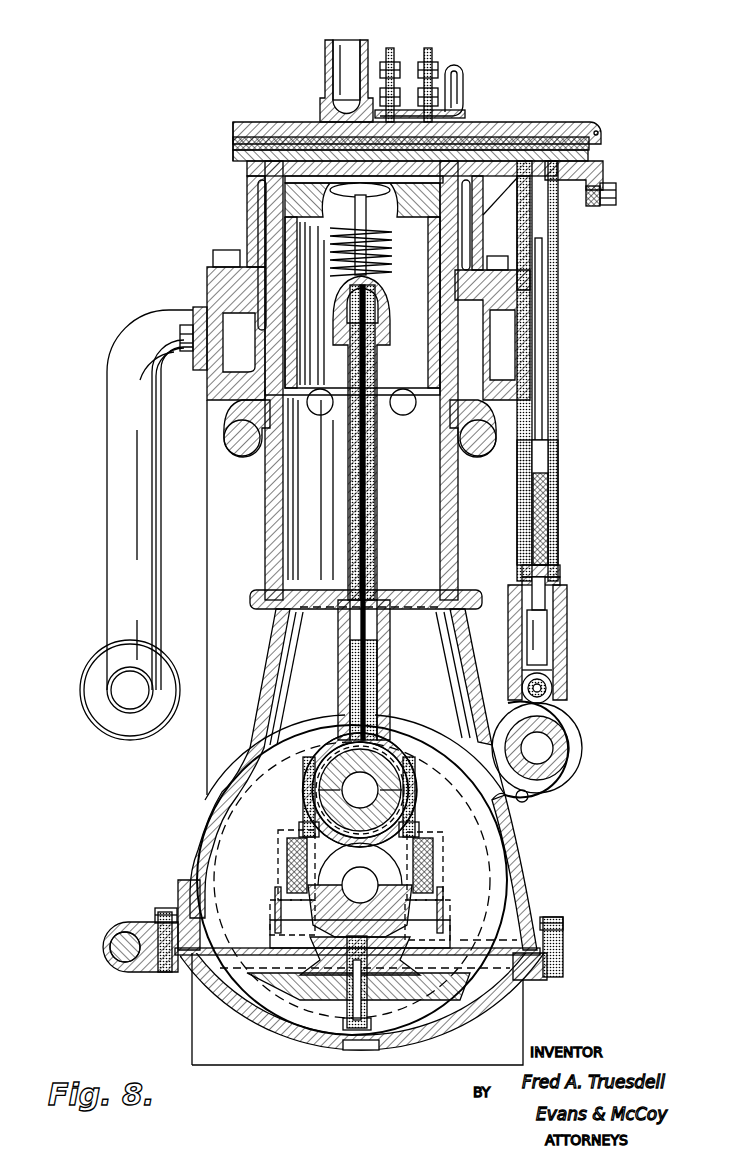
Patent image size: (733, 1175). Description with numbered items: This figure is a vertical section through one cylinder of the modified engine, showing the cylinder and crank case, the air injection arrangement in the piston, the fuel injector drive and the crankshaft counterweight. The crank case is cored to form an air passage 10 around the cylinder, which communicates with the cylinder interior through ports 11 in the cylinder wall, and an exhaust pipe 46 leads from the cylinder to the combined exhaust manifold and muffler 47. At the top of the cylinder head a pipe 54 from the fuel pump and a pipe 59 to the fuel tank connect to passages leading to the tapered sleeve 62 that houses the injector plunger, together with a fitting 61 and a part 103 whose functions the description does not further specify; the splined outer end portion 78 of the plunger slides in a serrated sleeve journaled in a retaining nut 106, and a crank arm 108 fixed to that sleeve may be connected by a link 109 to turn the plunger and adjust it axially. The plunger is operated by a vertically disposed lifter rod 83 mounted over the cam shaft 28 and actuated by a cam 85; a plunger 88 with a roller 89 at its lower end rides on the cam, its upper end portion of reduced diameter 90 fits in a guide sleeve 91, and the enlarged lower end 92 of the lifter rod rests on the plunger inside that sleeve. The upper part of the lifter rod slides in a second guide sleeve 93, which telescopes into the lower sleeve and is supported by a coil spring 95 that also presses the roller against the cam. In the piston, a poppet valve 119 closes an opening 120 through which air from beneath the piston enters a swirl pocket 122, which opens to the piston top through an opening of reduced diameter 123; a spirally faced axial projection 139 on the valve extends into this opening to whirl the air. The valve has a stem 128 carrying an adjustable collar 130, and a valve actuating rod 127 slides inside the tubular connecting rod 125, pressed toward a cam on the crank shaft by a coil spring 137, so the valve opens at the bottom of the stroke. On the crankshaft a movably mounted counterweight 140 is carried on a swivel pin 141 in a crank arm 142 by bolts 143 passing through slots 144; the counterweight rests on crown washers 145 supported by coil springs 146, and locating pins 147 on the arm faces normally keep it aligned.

The air passage 10 is at (228, 470).
The port 11 is at (234, 445).
The cam shaft 28 is at (545, 755).
The exhaust pipe 46 is at (107, 490).
The combined exhaust manifold and muffler 47 is at (86, 655).
The pipe 54 is at (430, 50).
The pipe 59 is at (390, 50).
The bracket 61 is at (458, 74).
The tapered sleeve 62 is at (320, 128).
The splined outer end portion 78 is at (602, 139).
The lifter rod 83 is at (558, 402).
The cam 85 is at (562, 745).
The plunger 88 is at (560, 630).
The roller 89 is at (553, 688).
The upper end portion of reduced diameter 90 is at (548, 592).
The guide sleeve 91 is at (558, 500).
The enlarged lower end 92 is at (560, 568).
The second guide sleeve 93 is at (558, 346).
The coil spring 95 is at (558, 530).
The head plate 103 is at (600, 152).
The retaining nut 106 is at (590, 124).
The crank arm 108 is at (603, 172).
The link 109 is at (605, 203).
The poppet valve 119 is at (390, 195).
The opening 120 is at (262, 218).
The swirl pocket 122 is at (262, 195).
The opening of reduced diameter 123 is at (290, 130).
The tubular connecting rod 125 is at (375, 560).
The valve actuating rod 127 is at (367, 580).
The stem 128 is at (384, 250).
The adjustable collar 130 is at (340, 270).
The coil spring 137 is at (376, 672).
The spirally faced axial projection 139 is at (345, 190).
The counterweight 140 is at (300, 975).
The swivel pin 141 is at (282, 895).
The crank arm 142 is at (400, 860).
The bolt 143 is at (300, 940).
The slot 144 is at (388, 978).
The crown washer 145 is at (360, 1030).
The coil spring 146 is at (320, 1035).
The locating pin 147 is at (452, 940).